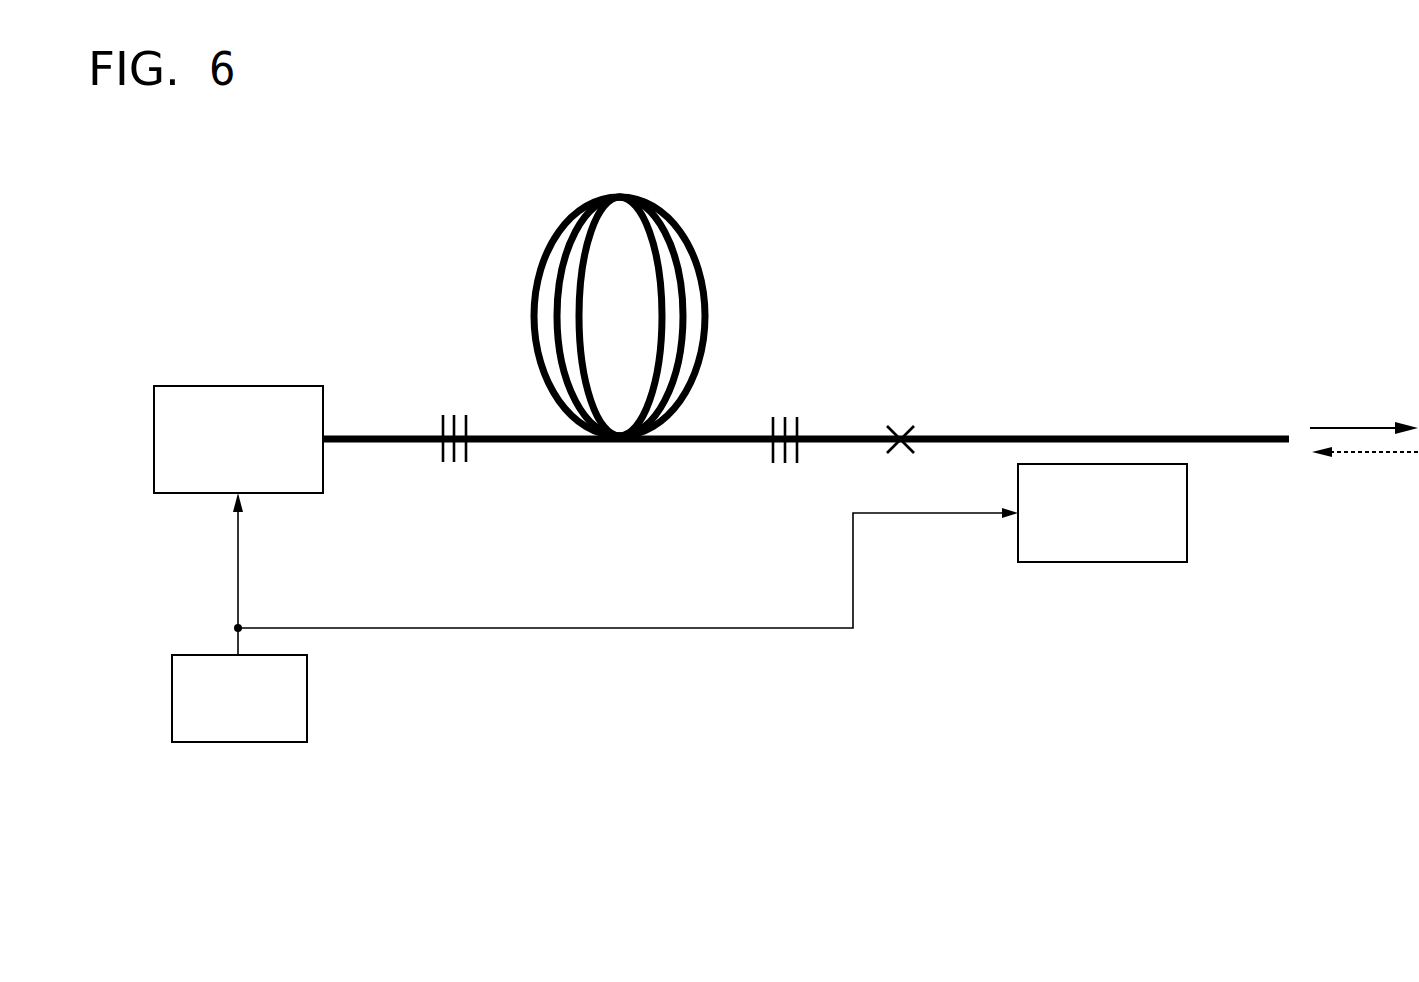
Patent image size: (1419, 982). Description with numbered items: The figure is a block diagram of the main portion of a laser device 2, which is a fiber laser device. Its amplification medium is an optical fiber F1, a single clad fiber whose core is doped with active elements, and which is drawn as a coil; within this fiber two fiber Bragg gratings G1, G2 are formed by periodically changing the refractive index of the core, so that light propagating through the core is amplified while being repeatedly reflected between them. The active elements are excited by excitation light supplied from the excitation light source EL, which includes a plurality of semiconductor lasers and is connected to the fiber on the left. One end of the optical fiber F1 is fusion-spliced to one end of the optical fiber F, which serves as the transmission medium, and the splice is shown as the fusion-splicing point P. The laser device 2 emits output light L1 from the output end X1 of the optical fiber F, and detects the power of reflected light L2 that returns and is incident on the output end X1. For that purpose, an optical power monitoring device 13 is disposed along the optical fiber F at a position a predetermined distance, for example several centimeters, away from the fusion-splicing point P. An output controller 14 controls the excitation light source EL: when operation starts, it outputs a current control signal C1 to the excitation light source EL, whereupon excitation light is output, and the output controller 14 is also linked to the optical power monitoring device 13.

The laser device 2 is at (1074, 163).
The excitation light source EL is at (242, 385).
The optical fiber F is at (1085, 435).
The optical fiber F1 is at (709, 322).
The fiber Bragg grating G1 is at (455, 465).
The fiber Bragg grating G2 is at (785, 466).
The fusion-splicing point P is at (902, 408).
The optical power monitoring device 13 is at (1187, 513).
The output controller 14 is at (307, 700).
The current control signal C1 is at (219, 563).
The output light L1 is at (1358, 428).
The reflected light L2 is at (1380, 456).
The output end X1 is at (1300, 470).